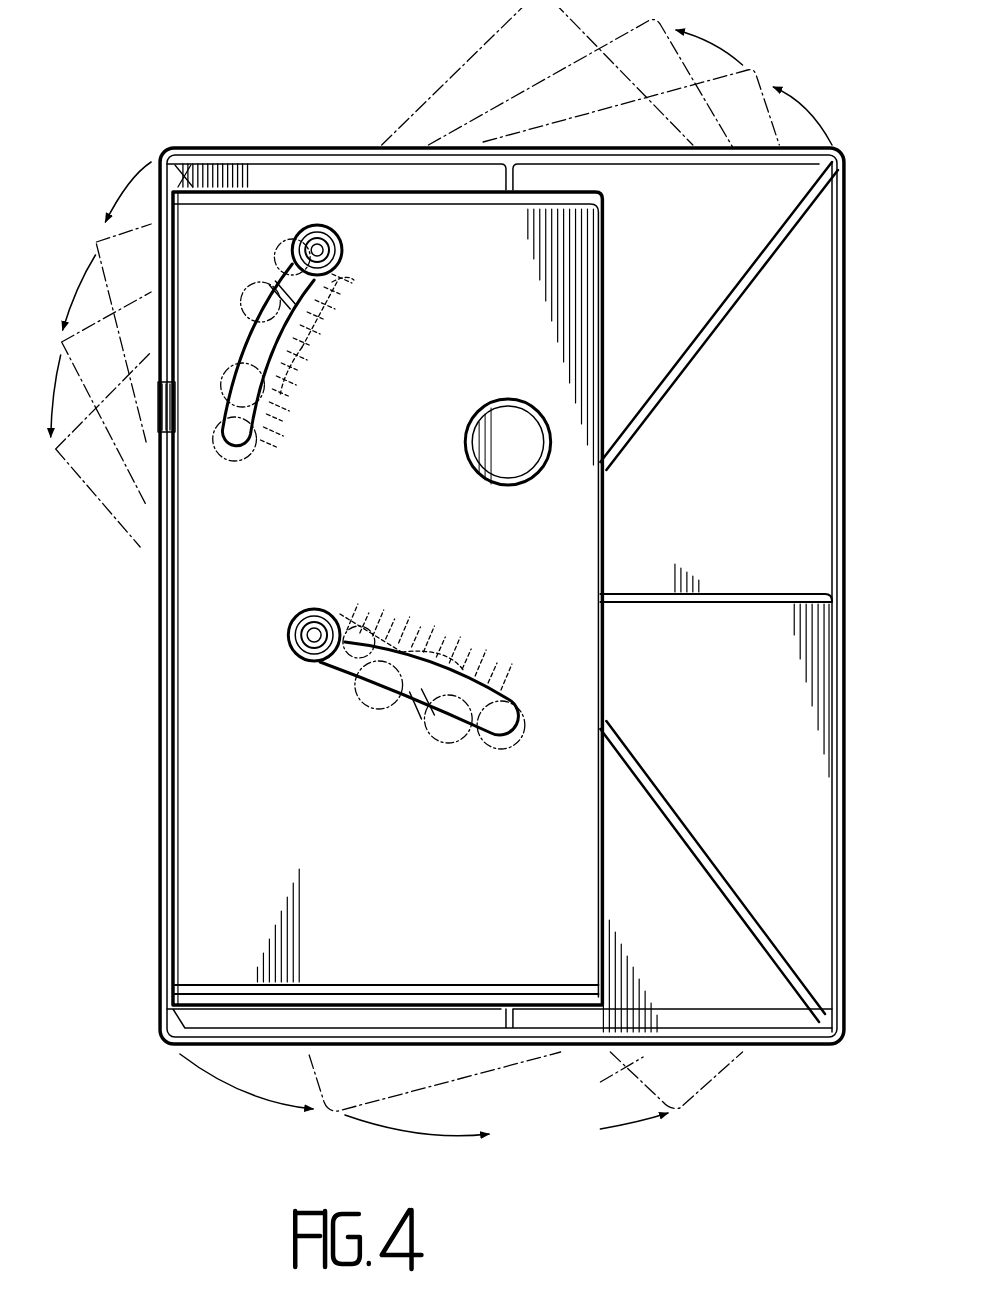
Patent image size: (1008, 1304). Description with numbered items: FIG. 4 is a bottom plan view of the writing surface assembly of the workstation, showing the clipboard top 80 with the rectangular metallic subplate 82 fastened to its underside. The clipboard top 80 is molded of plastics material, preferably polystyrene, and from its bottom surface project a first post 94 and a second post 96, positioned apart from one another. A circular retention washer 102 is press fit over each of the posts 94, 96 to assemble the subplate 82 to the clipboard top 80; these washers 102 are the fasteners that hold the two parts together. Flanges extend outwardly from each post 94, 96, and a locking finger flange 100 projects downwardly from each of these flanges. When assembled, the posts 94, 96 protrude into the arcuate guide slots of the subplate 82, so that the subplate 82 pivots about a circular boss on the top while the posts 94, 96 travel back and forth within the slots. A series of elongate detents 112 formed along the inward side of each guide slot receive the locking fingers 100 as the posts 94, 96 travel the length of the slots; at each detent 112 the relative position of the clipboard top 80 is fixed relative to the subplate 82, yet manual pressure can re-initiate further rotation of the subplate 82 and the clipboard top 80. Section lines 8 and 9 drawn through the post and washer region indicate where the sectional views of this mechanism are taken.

The clipboard top 80 is at (757, 1050).
The subplate 82 is at (200, 836).
The first post 94 is at (308, 237).
The second post 96 is at (313, 645).
The locking finger flange 100 is at (338, 280).
The retention washer 102 is at (321, 240).
The detent 112 is at (290, 403).
The section line 8- 8 is at (353, 593).
The section line 9- 9 is at (333, 598).